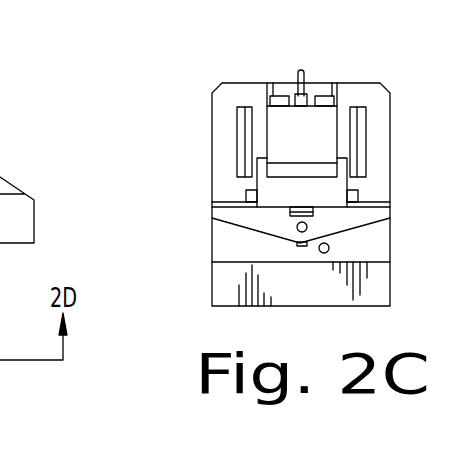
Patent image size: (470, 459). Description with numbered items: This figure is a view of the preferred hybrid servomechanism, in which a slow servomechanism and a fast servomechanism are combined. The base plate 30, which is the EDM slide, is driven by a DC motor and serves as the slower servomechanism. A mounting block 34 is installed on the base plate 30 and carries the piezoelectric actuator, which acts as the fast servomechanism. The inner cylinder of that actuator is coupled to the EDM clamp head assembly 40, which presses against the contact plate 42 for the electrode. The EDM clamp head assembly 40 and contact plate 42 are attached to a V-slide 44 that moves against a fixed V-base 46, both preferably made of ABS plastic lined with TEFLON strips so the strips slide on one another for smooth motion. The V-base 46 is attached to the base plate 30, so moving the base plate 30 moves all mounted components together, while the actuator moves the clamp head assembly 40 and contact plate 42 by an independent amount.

The base plate 30 is at (385, 278).
The mounting block 34 is at (218, 83).
The EDM clamp head assembly 40 is at (278, 131).
The contact plate 42 is at (267, 192).
The V-slide 44 is at (385, 211).
The V-base 46 is at (383, 245).